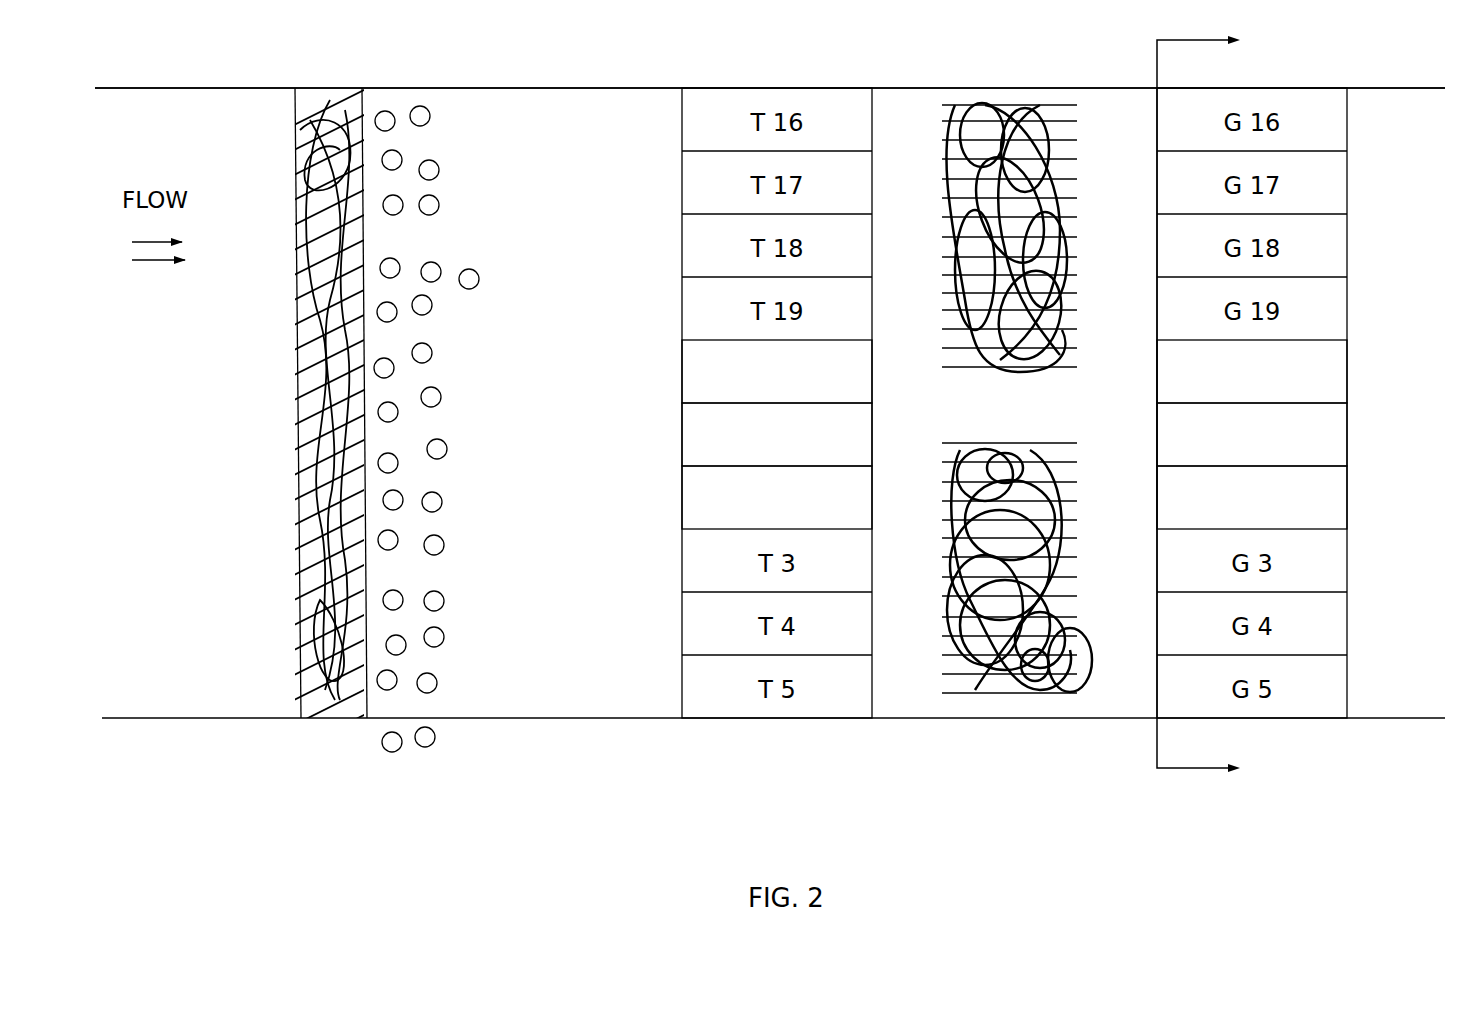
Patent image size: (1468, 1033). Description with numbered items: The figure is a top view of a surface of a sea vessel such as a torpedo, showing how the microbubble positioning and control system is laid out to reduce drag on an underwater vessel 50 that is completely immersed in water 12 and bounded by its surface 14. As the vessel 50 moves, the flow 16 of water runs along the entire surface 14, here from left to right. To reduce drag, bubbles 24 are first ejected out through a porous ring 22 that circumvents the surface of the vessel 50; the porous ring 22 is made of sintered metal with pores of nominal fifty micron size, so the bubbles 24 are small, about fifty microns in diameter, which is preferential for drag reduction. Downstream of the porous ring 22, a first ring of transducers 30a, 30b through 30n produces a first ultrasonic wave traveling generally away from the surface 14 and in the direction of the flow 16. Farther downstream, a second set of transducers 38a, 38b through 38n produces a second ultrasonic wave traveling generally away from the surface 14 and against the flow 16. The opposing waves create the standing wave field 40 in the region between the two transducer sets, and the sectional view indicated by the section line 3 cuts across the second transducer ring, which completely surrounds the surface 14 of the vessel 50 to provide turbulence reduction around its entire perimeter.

The liquid 12 is at (846, 36).
The surface 14 is at (588, 88).
The flow 16 is at (160, 262).
The porous ring 22 is at (345, 266).
The bubbles 24 is at (439, 584).
The underwater vessel 50 is at (543, 382).
The first ring transducer 30n is at (682, 370).
The first ring transducer 30a is at (682, 422).
The first ring transducer 30b is at (682, 493).
The standing wave field 40 is at (1081, 418).
The second set transducer 38n is at (1348, 378).
The second set transducer 38a is at (1348, 438).
The second set transducer 38b is at (1348, 505).
The section line 3- 3 is at (1208, 404).